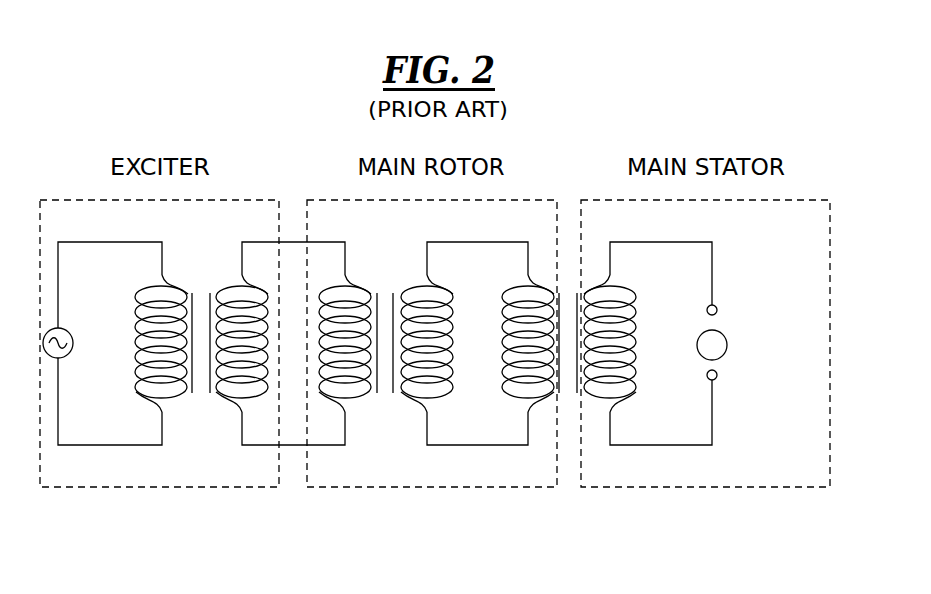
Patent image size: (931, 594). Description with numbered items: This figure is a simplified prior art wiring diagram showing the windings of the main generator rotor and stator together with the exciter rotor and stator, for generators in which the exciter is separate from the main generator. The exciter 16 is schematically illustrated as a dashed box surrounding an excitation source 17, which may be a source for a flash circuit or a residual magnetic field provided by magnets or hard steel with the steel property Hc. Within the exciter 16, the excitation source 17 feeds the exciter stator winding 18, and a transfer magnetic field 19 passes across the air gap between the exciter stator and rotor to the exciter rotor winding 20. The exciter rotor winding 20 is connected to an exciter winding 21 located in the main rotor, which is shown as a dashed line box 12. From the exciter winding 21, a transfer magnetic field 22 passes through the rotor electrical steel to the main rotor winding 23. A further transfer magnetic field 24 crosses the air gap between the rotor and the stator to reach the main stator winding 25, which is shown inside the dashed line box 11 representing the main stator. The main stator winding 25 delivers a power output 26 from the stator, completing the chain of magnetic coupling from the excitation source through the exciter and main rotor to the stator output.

The main stator 11 is at (814, 196).
The main rotor 12 is at (535, 196).
The exciter 16 is at (245, 196).
The excitation source 17 is at (67, 357).
The exciter stator winding 18 is at (137, 401).
The transfer magnetic field 19 is at (199, 397).
The exciter rotor winding 20 is at (219, 398).
The exciter winding 21 is at (330, 400).
The transfer magnetic field 22 is at (388, 396).
The main rotor winding 23 is at (548, 393).
The transfer magnetic field 24 is at (571, 393).
The main stator winding 25 is at (630, 400).
The power output 26 is at (727, 345).